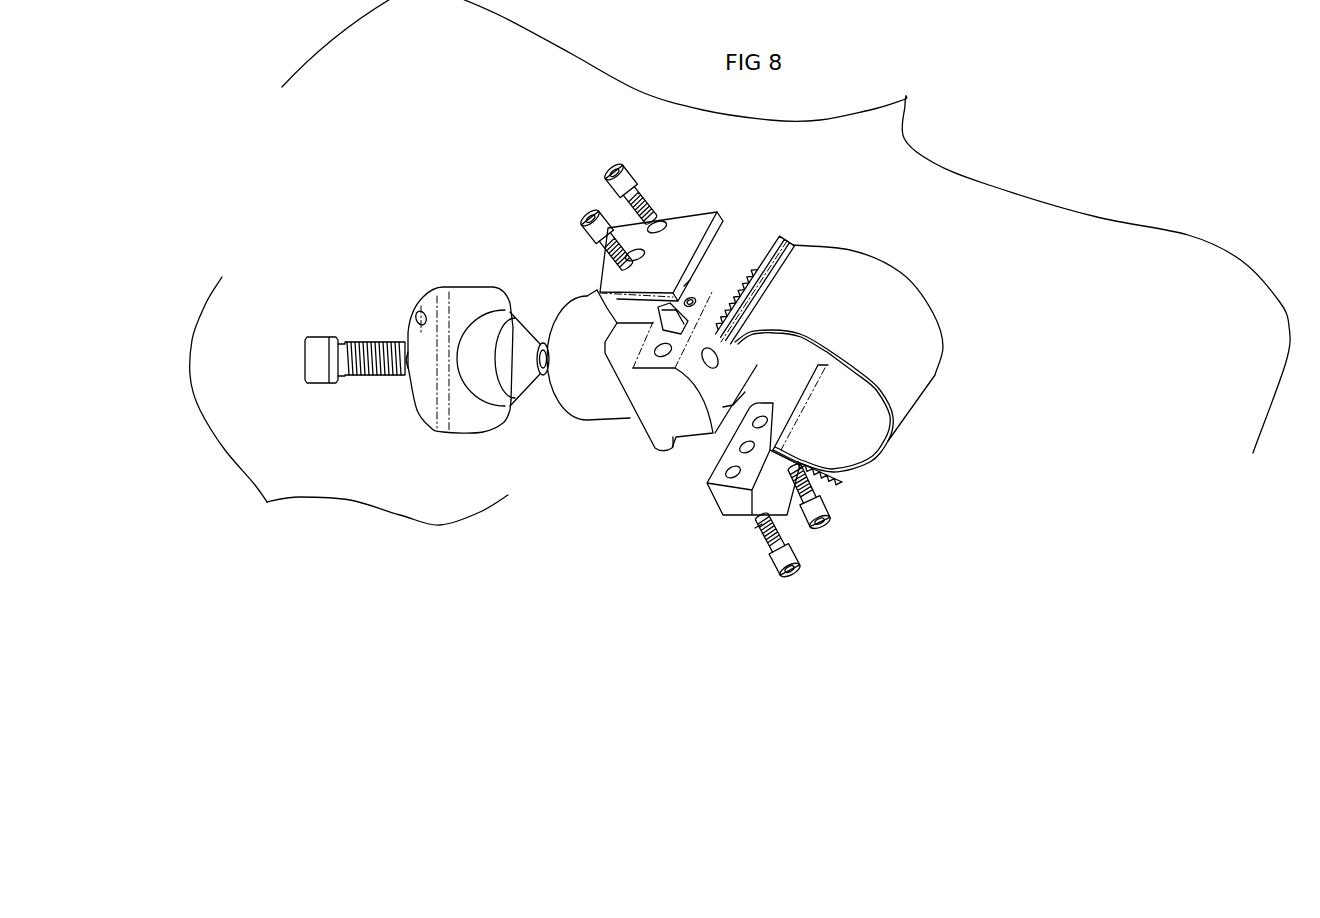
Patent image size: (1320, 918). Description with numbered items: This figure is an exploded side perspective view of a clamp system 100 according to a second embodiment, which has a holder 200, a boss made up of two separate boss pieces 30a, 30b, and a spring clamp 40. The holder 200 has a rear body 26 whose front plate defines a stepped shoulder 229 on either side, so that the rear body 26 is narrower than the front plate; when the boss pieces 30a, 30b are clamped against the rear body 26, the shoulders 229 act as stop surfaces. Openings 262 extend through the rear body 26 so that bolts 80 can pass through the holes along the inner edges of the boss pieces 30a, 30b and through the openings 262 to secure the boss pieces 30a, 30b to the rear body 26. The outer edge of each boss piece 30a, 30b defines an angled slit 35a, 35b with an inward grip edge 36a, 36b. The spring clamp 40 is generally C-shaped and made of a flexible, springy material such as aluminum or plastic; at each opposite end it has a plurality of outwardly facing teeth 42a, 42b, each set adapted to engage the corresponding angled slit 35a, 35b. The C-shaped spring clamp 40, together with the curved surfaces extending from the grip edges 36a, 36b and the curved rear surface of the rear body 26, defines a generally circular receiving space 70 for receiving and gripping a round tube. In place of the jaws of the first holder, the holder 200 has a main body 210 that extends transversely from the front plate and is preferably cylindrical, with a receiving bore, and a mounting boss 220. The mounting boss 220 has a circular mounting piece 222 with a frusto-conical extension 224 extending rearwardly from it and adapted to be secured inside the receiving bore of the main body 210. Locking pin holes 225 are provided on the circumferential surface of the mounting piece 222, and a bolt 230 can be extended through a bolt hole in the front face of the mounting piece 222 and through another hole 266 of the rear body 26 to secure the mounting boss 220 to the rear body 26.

The clamp system 100 is at (1037, 129).
The holder 200 is at (349, 403).
The bolts 80 is at (610, 180).
The mounting boss 220 is at (447, 293).
The circular mounting piece 222 is at (420, 332).
The frusto-conical extension 224 is at (507, 337).
The locking pin holes 225 is at (408, 360).
The bolt 230 is at (317, 350).
The main body 210 is at (567, 382).
The stepped shoulder 229 is at (637, 343).
The rear body 26 is at (663, 408).
The angled slit 35a is at (660, 312).
The boss piece 30a is at (683, 242).
The inward grip edge 36a is at (692, 302).
The openings 262 is at (687, 283).
The teeth 42a is at (792, 240).
The hole 266 is at (713, 367).
The spring clamp 40 is at (888, 332).
The receiving space 70 is at (808, 377).
The boss piece 30b is at (733, 503).
The angled slit 35b is at (775, 473).
The inward grip edge 36b is at (758, 530).
The teeth 42b is at (831, 477).